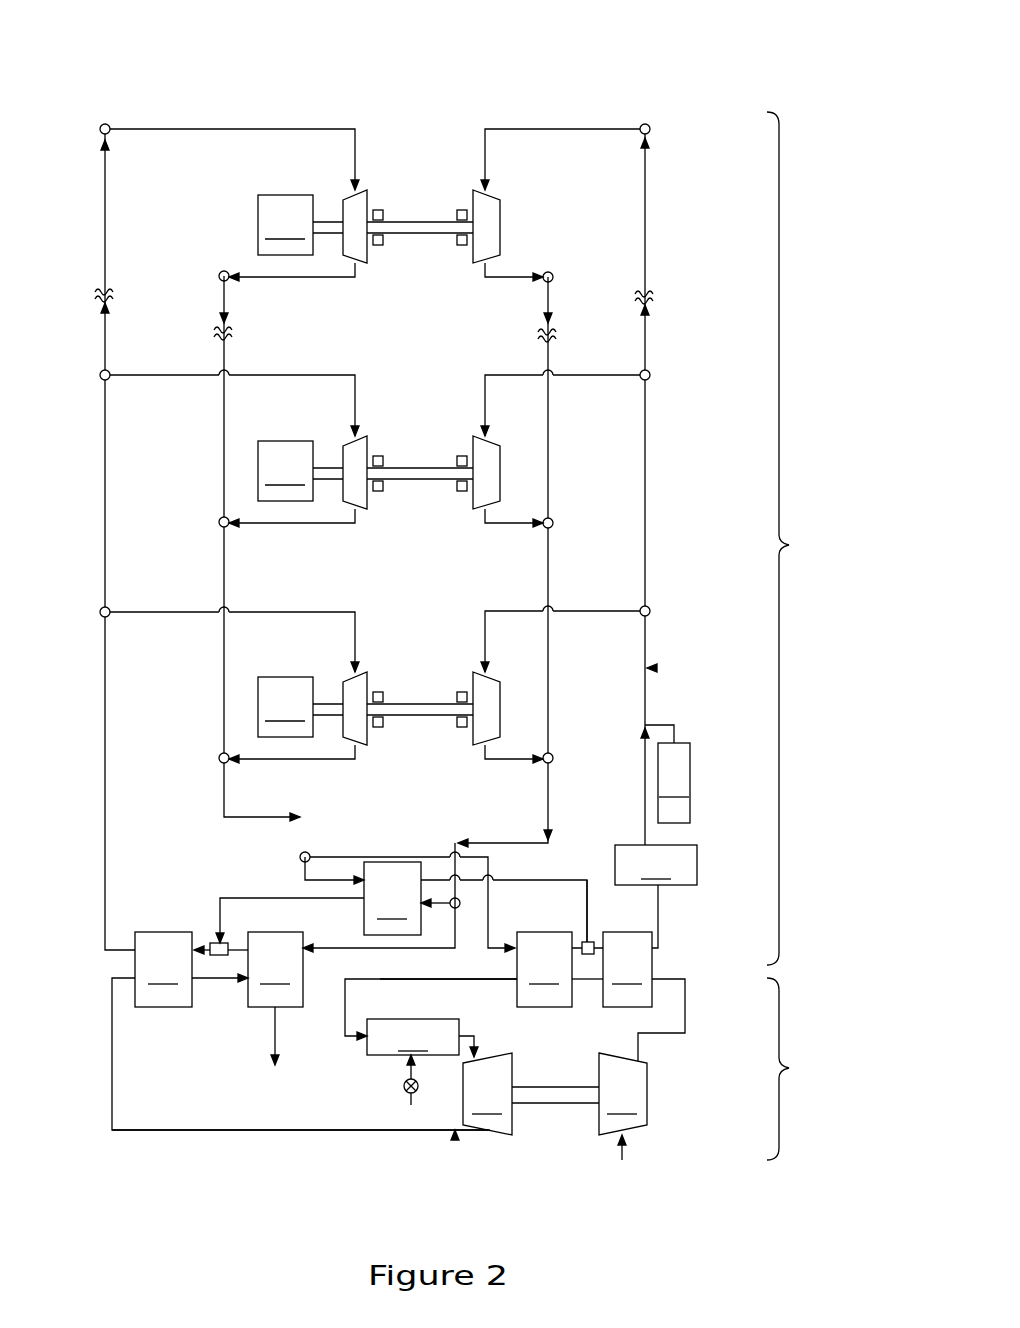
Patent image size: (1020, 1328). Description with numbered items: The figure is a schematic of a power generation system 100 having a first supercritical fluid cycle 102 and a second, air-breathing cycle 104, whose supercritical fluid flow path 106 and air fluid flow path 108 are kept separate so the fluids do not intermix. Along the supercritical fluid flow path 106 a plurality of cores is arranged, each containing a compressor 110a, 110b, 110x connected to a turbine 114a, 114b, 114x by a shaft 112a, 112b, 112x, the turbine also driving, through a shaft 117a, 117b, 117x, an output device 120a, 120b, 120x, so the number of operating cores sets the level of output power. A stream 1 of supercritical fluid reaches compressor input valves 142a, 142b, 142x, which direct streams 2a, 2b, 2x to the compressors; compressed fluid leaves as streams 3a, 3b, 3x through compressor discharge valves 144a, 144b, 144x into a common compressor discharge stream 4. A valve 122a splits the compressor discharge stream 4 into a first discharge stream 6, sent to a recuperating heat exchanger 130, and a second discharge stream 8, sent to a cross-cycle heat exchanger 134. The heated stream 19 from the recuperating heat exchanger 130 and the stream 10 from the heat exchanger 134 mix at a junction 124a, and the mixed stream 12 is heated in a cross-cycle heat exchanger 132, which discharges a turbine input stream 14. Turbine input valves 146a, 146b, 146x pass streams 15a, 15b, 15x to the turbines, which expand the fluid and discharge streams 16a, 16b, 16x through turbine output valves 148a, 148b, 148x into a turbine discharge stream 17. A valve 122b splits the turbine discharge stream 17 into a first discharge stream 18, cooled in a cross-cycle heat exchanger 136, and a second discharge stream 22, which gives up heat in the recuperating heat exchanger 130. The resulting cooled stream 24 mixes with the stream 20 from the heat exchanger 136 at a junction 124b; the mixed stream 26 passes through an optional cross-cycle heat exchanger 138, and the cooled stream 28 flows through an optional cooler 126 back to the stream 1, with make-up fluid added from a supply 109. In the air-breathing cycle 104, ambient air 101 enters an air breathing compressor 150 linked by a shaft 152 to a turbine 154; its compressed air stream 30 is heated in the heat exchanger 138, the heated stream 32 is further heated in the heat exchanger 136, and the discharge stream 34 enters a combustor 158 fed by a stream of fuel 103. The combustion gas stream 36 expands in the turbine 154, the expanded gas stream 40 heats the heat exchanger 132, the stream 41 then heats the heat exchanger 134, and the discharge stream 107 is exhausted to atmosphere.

The power generation system 100 is at (212, 76).
The first supercritical fluid cycle 102 is at (798, 538).
The second or air-breathing cycle 104 is at (798, 1069).
The supercritical fluid flow path 106 is at (657, 668).
The supply 109 is at (667, 774).
The turbine input stream 14 is at (103, 200).
The stream of supercritical fluid 1 is at (643, 195).
The stream 15x is at (152, 127).
The stream 15b is at (156, 373).
The stream 15a is at (150, 610).
The stream 2x is at (590, 127).
The stream 2b is at (610, 373).
The stream 2a is at (611, 609).
The turbine input valve 146x is at (104, 123).
The turbine input valve 146b is at (100, 373).
The turbine input valve 146a is at (100, 610).
The compressor input valve 142x is at (647, 123).
The compressor input valve 142b is at (650, 373).
The compressor input valve 142a is at (650, 609).
The output device 120x is at (285, 225).
The output device 120b is at (285, 471).
The output device 120a is at (285, 707).
The shaft 117x is at (330, 218).
The shaft 117b is at (328, 465).
The shaft 117a is at (328, 701).
The turbine 114x is at (368, 200).
The turbine 114b is at (368, 447).
The turbine 114a is at (368, 682).
The compressor 110x is at (493, 200).
The compressor 110b is at (492, 445).
The compressor 110a is at (492, 681).
The shaft 112x is at (400, 236).
The shaft 112b is at (400, 482).
The shaft 112a is at (400, 718).
The turbine output valve 148x is at (222, 270).
The turbine output valve 148b is at (219, 520).
The turbine output valve 148a is at (219, 756).
The compressor discharge valve 144x is at (550, 271).
The compressor discharge valve 144b is at (553, 520).
The compressor discharge valve 144a is at (553, 756).
The stream 16x is at (258, 280).
The stream 16b is at (258, 526).
The stream 16a is at (242, 764).
The stream 3x is at (500, 280).
The stream 3b is at (500, 526).
The stream 3a is at (500, 762).
The turbine discharge stream 17 is at (222, 292).
The compressor discharge stream 4 is at (551, 298).
The first turbine discharge stream 18 is at (340, 855).
The first compressor discharge stream 6 is at (450, 898).
The discharge stream 24 is at (560, 878).
The stream 19 is at (220, 895).
The valve 122b is at (300, 857).
The valve 122a is at (458, 920).
The second turbine discharge stream 22 is at (317, 882).
The recuperating heat exchanger 130 is at (392, 898).
The incoming stream 20 is at (583, 940).
The mixed stream 26 is at (598, 942).
The stream of cooled supercritical fluid 28 is at (660, 912).
The cooler 126 is at (656, 865).
The mixed stream 12 is at (208, 942).
The stream 10 is at (240, 948).
The cross-cycle heat exchanger 132 is at (163, 969).
The cross-cycle heat exchanger 134 is at (275, 969).
The cross-cycle heat exchanger 136 is at (544, 969).
The cross-cycle heat exchanger 138 is at (627, 969).
The stream of compressed air 30 is at (687, 995).
The second compressor discharge stream 8 is at (390, 981).
The discharge stream 34 is at (462, 982).
The discharge stream 36 is at (478, 1040).
The stream of heated compressed air 32 is at (588, 982).
The junction 124b is at (591, 956).
The junction 124a is at (219, 957).
The stream of hot combustion gas 41 is at (200, 981).
The discharge stream 107 is at (283, 1045).
The combustor 158 is at (413, 1037).
The shaft 152 is at (527, 1098).
The stream of expanded hot combustion gas 40 is at (185, 1128).
The stream of fuel 103 is at (404, 1089).
The turbine 154 is at (487, 1094).
The air breathing compressor 150 is at (623, 1094).
The ambient air 101 is at (628, 1152).
The air fluid flow path 108 is at (457, 1142).